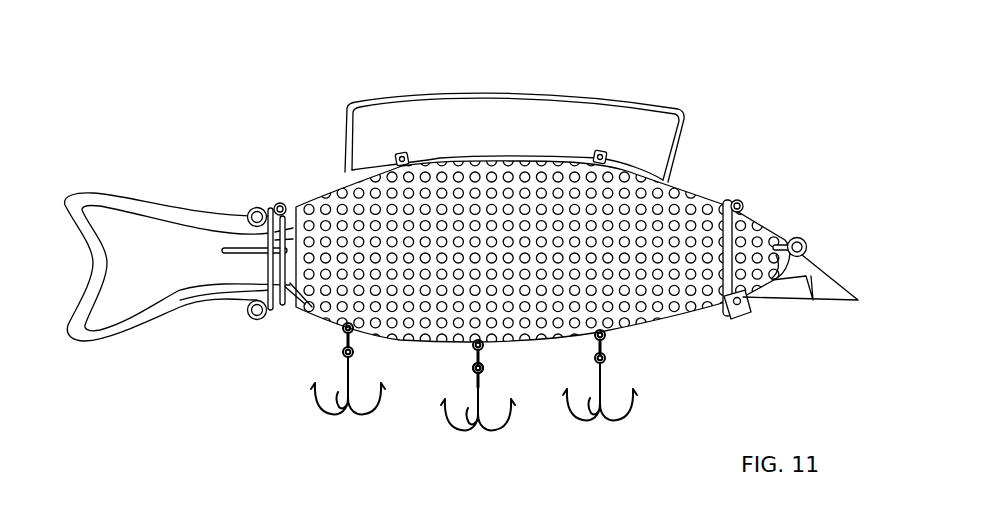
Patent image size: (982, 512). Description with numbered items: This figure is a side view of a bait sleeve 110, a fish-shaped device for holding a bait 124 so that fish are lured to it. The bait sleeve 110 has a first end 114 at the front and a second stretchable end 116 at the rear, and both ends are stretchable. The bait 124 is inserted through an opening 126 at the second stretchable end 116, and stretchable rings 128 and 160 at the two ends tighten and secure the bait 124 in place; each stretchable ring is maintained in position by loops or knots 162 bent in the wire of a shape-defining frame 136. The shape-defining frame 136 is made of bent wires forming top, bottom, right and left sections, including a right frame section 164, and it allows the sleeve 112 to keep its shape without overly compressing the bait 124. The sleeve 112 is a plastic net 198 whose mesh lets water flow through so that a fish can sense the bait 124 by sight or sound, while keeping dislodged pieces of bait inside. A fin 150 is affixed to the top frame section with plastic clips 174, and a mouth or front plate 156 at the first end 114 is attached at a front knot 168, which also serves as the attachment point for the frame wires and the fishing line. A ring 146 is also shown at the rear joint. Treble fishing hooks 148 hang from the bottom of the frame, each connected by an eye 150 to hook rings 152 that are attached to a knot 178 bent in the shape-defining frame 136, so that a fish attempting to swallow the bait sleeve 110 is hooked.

The bait sleeve 110 is at (561, 206).
The sleeve 112 is at (687, 207).
The first end 114 is at (783, 235).
The second stretchable end 116 is at (176, 248).
The bait 124 is at (88, 270).
The opening 126 is at (240, 303).
The stretchable ring 128 is at (276, 318).
The shape-defining frame 136 is at (778, 236).
The hinge ring 146 is at (280, 203).
The fishing hook 148 is at (487, 427).
The fin 150 is at (512, 95).
The hook rings 152 is at (473, 349).
The front plate 156 is at (833, 292).
The stretchable ring 160 is at (726, 296).
The loops or knots 162 is at (253, 320).
The right frame section 164 is at (288, 308).
The front knot 168 is at (799, 237).
The plastic clips 174 is at (400, 152).
The knot 178 is at (487, 349).
The plastic net 198 is at (622, 290).